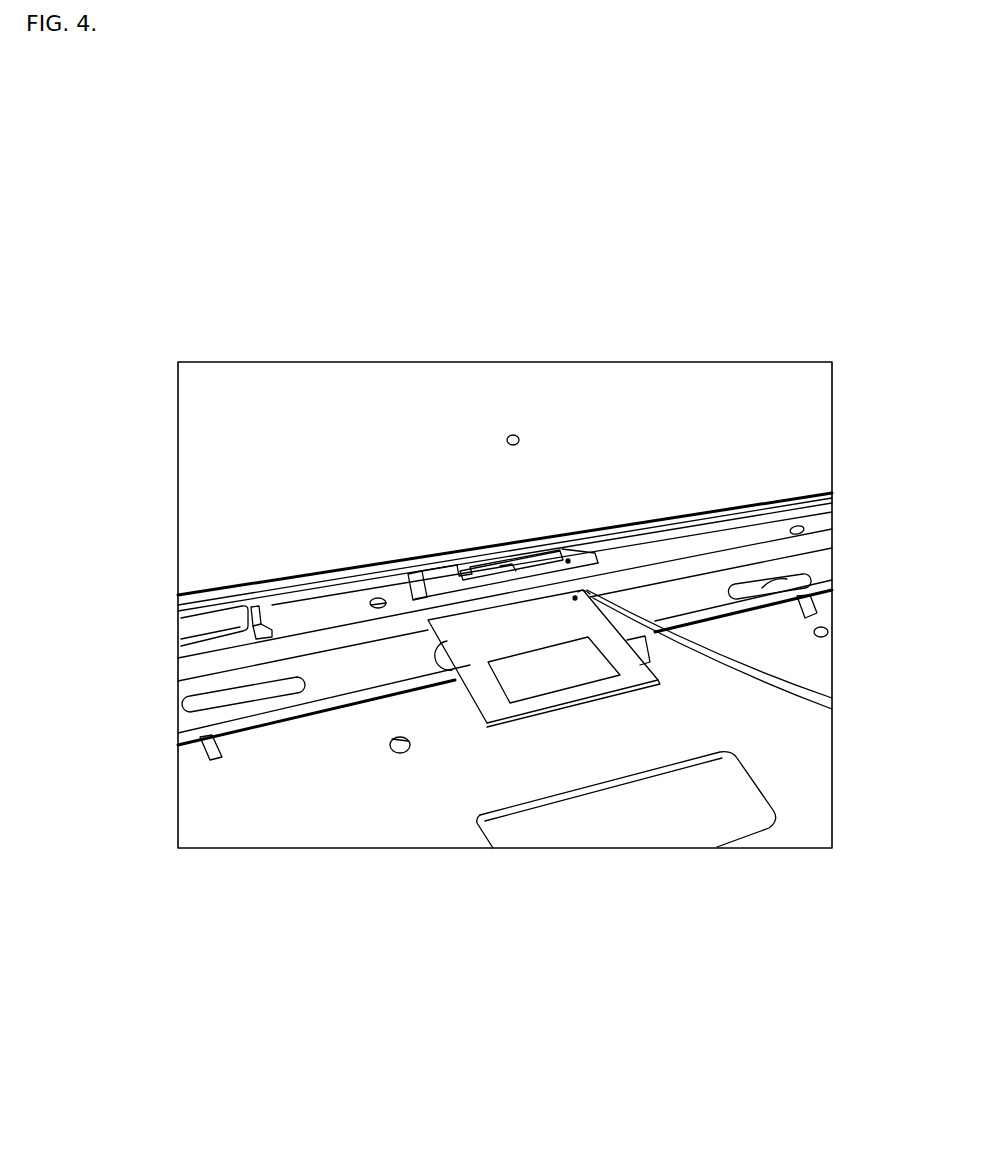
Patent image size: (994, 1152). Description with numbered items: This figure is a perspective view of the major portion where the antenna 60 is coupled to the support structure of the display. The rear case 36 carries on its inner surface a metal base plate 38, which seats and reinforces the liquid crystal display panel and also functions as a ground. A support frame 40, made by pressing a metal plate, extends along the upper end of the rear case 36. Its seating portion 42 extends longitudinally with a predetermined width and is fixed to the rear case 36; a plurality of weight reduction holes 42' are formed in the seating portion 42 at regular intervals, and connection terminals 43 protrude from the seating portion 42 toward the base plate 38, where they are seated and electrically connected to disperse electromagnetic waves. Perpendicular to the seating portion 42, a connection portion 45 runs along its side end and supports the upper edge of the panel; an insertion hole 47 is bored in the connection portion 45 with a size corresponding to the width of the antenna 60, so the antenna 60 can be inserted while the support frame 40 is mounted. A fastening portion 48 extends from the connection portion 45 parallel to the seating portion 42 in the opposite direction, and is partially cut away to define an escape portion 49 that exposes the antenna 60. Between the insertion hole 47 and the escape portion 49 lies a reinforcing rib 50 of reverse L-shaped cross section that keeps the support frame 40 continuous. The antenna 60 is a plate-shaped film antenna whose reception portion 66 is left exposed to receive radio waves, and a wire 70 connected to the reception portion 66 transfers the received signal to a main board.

The rear case 36 is at (636, 822).
The base plate 38 is at (323, 805).
The support frame 40 is at (314, 590).
The seating portion 42 is at (505, 516).
The weight reduction holes 42' is at (504, 647).
The connection terminal 43 is at (206, 750).
The connection portion 45 is at (818, 547).
The insertion hole 47 is at (576, 597).
The fastening portion 48 is at (747, 537).
The escape portion 49 is at (568, 560).
The reinforcing rib 50 is at (427, 598).
The antenna 60 is at (485, 680).
The reception portion 66 is at (468, 580).
The wire 70 is at (833, 697).